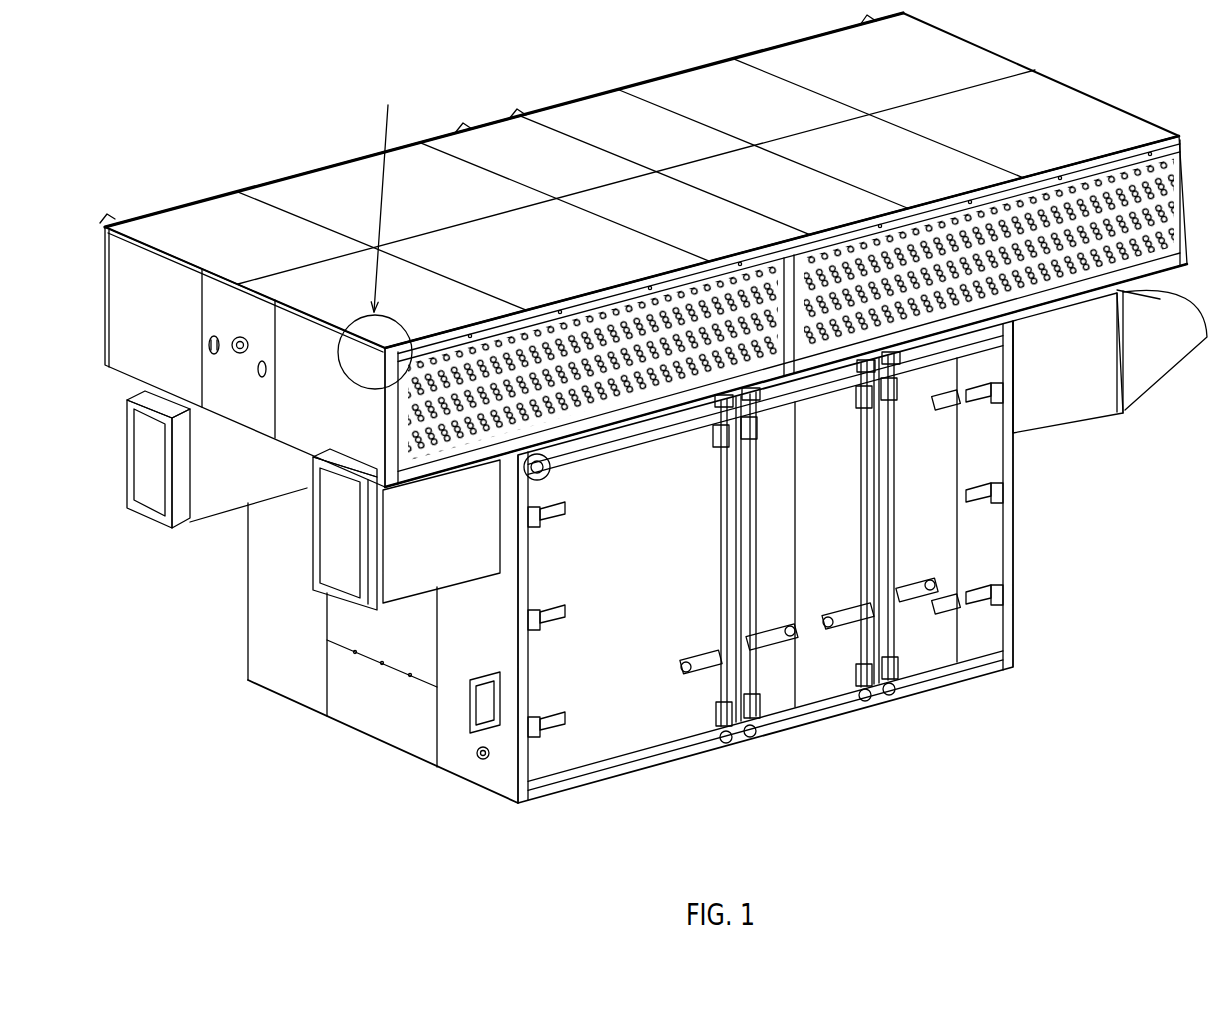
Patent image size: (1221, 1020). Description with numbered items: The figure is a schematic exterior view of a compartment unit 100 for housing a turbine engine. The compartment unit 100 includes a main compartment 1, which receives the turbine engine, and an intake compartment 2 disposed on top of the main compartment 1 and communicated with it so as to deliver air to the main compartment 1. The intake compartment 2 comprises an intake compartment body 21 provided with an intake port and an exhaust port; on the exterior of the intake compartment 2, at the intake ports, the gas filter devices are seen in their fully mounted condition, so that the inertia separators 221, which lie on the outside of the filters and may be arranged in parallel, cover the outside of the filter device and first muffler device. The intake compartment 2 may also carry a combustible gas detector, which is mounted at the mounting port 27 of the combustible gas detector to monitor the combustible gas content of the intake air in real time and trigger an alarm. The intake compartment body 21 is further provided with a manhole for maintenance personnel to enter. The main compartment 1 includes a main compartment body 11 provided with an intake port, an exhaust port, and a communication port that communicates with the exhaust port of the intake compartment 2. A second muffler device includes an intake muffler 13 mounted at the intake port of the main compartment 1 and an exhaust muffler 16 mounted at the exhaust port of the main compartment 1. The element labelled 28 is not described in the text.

The compartment unit 100 is at (258, 133).
The main compartment 1 is at (1035, 582).
The intake compartment 2 is at (1191, 158).
The main compartment body 11 is at (820, 500).
The intake muffler 13 is at (208, 473).
The exhaust muffler 16 is at (1133, 357).
The intake compartment body 21 is at (527, 240).
The mounting port of the combustible gas detector 27 is at (243, 357).
The side panel 28 is at (223, 393).
The inertia separator 221 is at (1066, 190).